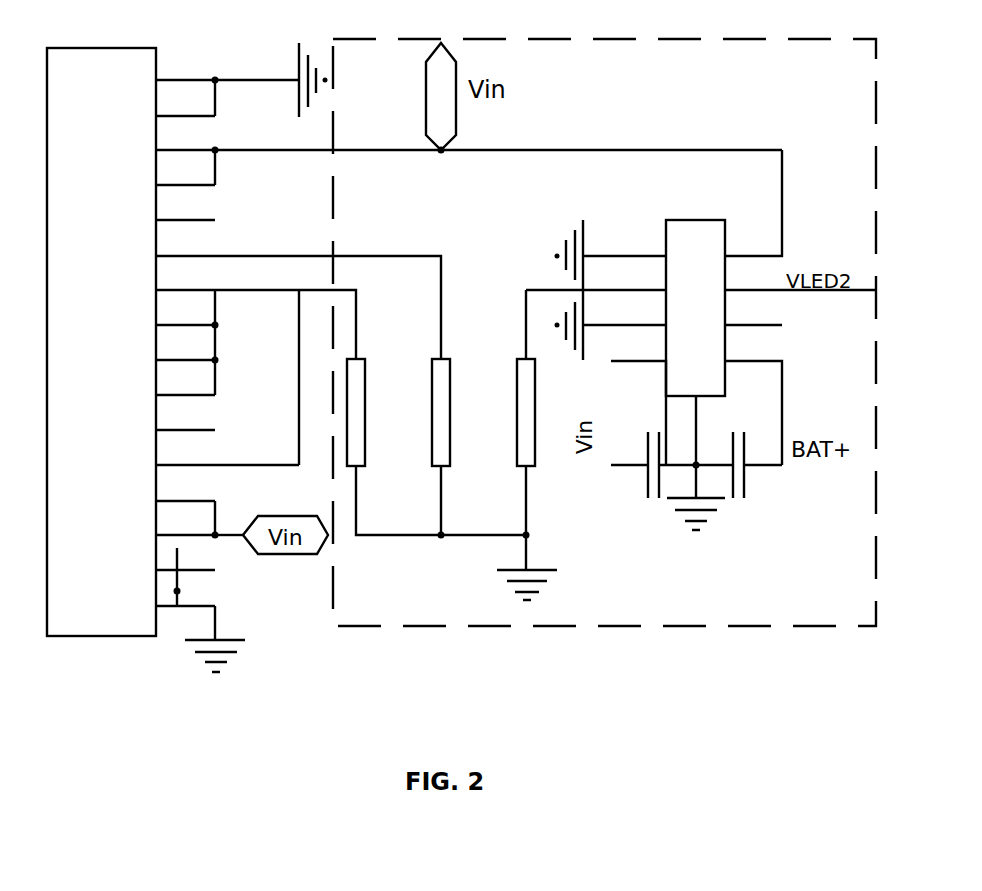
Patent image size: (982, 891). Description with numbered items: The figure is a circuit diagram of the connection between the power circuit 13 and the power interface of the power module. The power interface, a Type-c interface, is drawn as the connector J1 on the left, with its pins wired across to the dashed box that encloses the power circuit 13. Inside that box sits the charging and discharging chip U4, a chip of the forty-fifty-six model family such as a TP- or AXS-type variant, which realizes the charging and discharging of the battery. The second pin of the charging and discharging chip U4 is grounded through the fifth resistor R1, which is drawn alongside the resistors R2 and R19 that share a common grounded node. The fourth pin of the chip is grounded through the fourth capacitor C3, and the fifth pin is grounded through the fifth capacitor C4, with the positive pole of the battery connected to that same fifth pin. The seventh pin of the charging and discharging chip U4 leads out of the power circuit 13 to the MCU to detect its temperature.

The power circuit 13 is at (745, 627).
The USB-C connector J1 is at (137, 351).
The charging and discharging chip U4 is at (701, 279).
The fifth resistor R1 is at (377, 412).
The resistor R2 is at (462, 412).
The resistor R19 is at (554, 412).
The fourth capacitor C3 is at (638, 470).
The fifth capacitor C4 is at (761, 470).